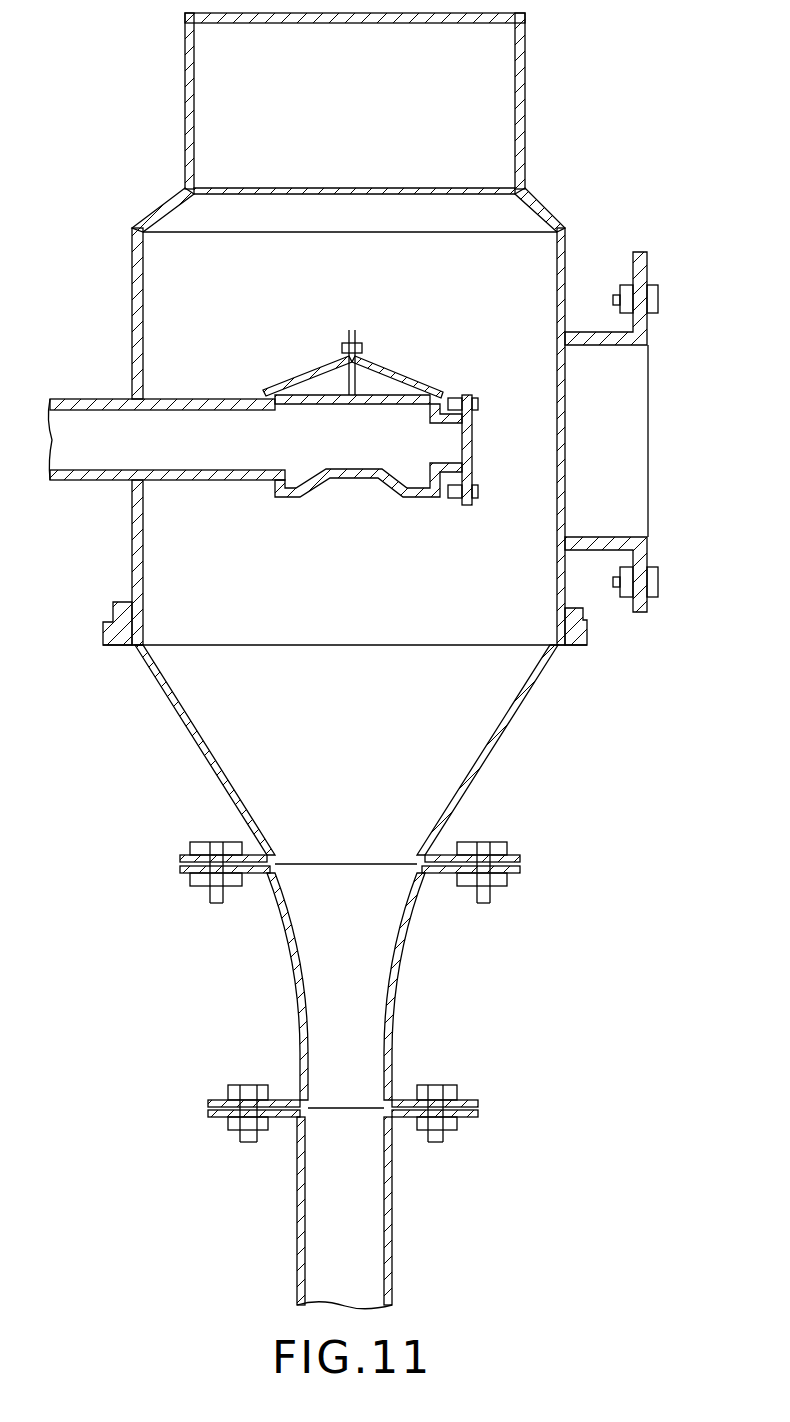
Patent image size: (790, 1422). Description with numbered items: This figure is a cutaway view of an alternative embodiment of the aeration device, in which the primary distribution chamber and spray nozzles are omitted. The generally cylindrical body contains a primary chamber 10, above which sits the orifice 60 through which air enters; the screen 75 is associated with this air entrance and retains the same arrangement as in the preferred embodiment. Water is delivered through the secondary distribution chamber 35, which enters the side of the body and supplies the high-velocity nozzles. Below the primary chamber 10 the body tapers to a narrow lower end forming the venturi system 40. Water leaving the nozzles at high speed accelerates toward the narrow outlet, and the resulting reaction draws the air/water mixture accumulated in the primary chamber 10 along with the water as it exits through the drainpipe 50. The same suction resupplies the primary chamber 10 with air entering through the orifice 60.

The orifice 60 is at (350, 123).
The primary chamber 10 is at (355, 595).
The secondary distribution chamber 35 is at (370, 452).
The screen 75 is at (583, 423).
The venturi system 40 is at (366, 1015).
The drainpipe 50 is at (360, 1220).